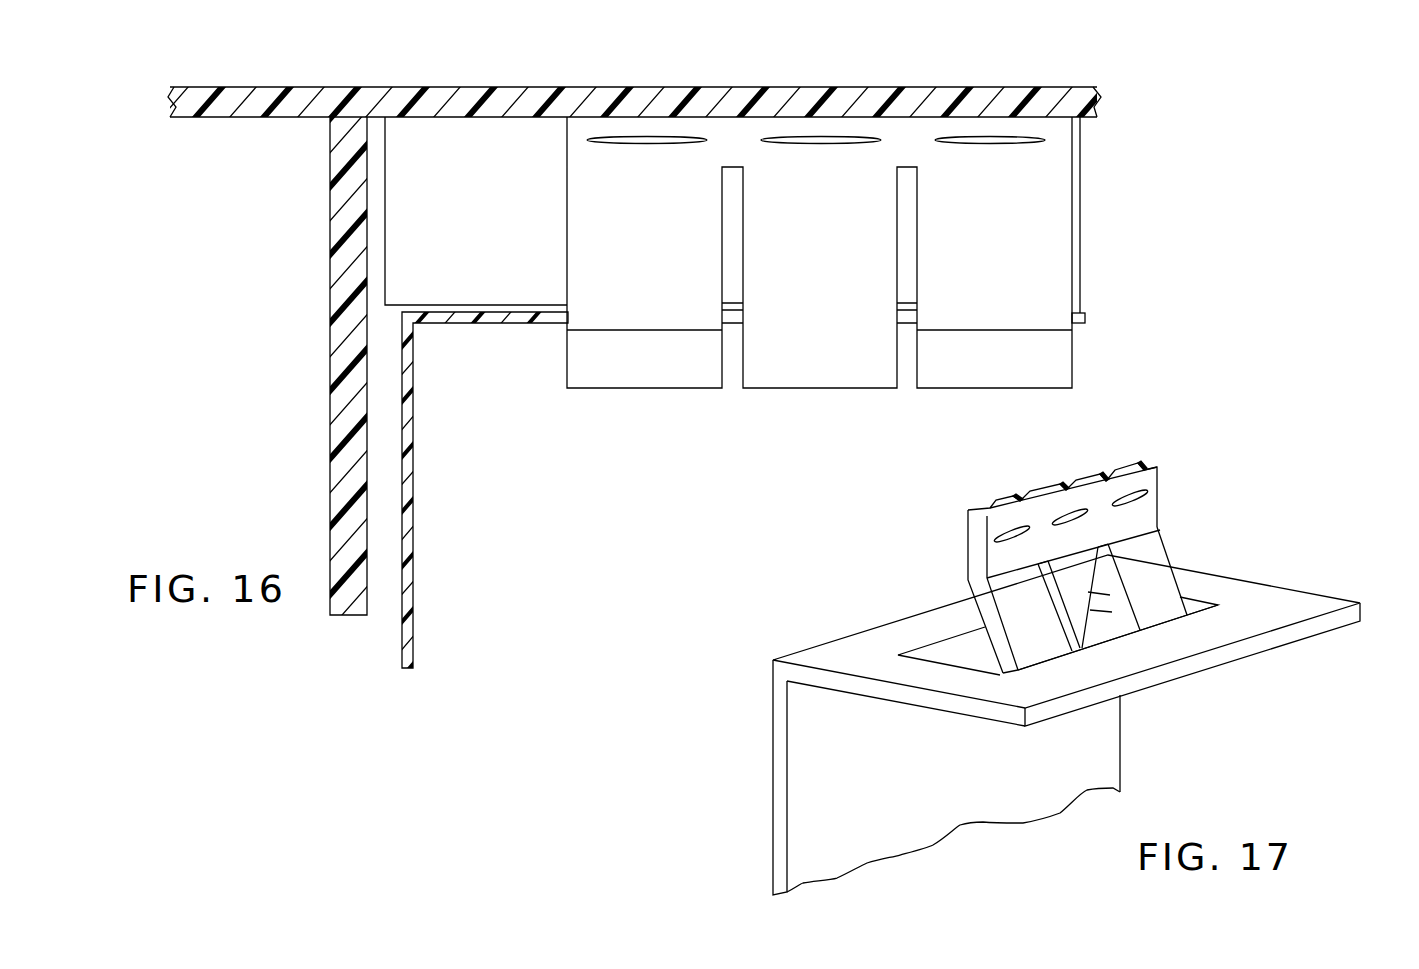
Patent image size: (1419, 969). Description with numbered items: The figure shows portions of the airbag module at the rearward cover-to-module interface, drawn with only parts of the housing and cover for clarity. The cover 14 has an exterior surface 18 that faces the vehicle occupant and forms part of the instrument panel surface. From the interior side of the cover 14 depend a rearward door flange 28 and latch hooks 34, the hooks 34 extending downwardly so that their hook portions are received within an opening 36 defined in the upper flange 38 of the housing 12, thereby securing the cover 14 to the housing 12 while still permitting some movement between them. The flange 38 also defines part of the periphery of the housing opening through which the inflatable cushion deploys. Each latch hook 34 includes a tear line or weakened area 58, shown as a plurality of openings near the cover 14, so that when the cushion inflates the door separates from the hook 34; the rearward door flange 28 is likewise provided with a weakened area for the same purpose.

In FIG. 16, the housing 12 is at (413, 443).
In FIG. 17, the housing 12 is at (1013, 803).
In FIG. 16, the cover 14 is at (845, 95).
In FIG. 16, the exterior surface 18 is at (645, 87).
In FIG. 16, the rearward door flange 28 is at (332, 303).
In FIG. 16, the latch hooks 34 is at (577, 223).
In FIG. 17, the latch hooks 34 is at (1153, 558).
In FIG. 17, the opening 36 is at (935, 653).
In FIG. 16, the flange 38 is at (1080, 325).
In FIG. 17, the flange 38 is at (1210, 657).
In FIG. 16, the tear line or weakened area 58 is at (1040, 140).
In FIG. 17, the tear line or weakened area 58 is at (1147, 495).